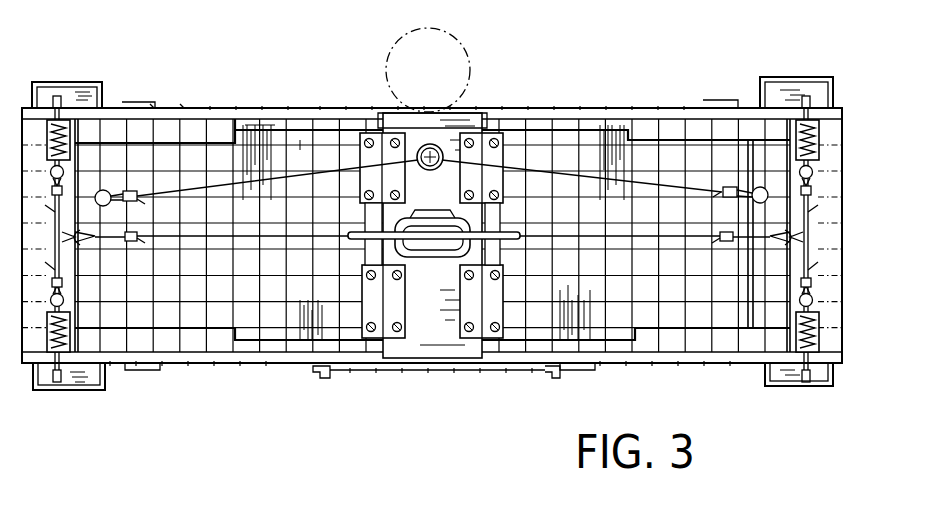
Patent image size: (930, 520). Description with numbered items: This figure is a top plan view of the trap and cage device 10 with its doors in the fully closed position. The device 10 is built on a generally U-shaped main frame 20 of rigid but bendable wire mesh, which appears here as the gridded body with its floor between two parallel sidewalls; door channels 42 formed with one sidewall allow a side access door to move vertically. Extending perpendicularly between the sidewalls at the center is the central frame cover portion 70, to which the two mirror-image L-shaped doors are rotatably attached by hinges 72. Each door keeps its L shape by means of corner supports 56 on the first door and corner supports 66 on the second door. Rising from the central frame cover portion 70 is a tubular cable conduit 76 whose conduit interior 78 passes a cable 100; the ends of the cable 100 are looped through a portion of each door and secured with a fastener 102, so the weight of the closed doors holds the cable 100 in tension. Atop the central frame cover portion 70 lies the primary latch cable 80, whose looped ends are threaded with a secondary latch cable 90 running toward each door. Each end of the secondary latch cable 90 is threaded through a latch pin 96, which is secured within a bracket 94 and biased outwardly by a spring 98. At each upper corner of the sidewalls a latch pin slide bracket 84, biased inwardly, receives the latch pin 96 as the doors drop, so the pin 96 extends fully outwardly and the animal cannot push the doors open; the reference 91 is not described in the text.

The trap and cage device 10 is at (596, 66).
The main frame member 20 is at (673, 108).
The door channels 42 is at (543, 377).
The corner supports 56 is at (192, 130).
The corner supports 66 is at (717, 128).
The central frame cover portion 70 is at (410, 345).
The hinges 72 is at (504, 140).
The tubular cable conduit 76 is at (431, 148).
The conduit interior 78 is at (424, 150).
The primary latch cable 80 is at (300, 237).
The latch pin slide bracket 84 is at (80, 82).
The secondary latch cable 90 is at (85, 222).
The lower hook 91 is at (813, 272).
The bracket 94 is at (823, 108).
The latch pin 96 is at (802, 108).
The spring 98 is at (818, 127).
The cable 100 is at (222, 185).
The fastener 102 is at (131, 190).